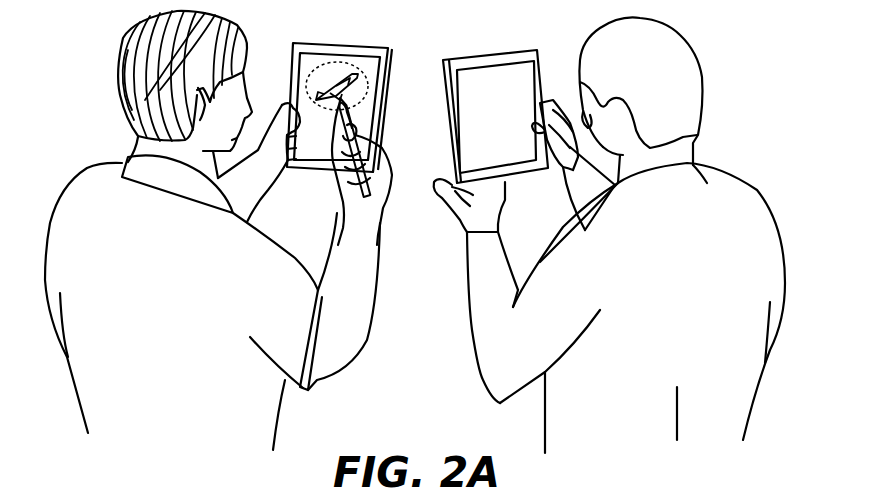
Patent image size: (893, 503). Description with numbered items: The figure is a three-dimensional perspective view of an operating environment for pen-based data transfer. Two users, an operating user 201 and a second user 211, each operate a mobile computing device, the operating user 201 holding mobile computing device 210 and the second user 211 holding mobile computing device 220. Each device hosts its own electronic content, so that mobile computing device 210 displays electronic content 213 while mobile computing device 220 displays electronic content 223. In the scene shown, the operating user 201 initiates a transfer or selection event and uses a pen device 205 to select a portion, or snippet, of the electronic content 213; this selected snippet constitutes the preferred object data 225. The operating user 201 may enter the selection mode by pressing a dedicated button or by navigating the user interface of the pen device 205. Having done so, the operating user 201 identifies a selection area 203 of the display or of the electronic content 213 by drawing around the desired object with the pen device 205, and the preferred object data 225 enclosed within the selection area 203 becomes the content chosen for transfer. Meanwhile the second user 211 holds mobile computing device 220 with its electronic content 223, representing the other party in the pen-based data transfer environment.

The operating user 201 is at (118, 163).
The user 211 is at (733, 167).
The mobile computing device 210 is at (300, 43).
The mobile computing device 220 is at (503, 50).
The selection area 203 is at (347, 63).
The preferred object data 225 is at (315, 78).
The pen device 205 is at (370, 198).
The electronic content 213 is at (317, 165).
The electronic content 223 is at (478, 64).